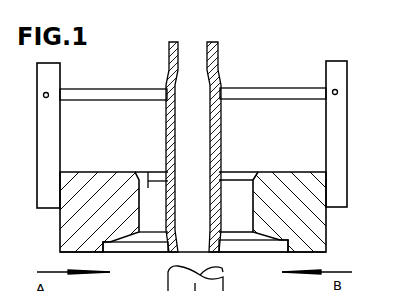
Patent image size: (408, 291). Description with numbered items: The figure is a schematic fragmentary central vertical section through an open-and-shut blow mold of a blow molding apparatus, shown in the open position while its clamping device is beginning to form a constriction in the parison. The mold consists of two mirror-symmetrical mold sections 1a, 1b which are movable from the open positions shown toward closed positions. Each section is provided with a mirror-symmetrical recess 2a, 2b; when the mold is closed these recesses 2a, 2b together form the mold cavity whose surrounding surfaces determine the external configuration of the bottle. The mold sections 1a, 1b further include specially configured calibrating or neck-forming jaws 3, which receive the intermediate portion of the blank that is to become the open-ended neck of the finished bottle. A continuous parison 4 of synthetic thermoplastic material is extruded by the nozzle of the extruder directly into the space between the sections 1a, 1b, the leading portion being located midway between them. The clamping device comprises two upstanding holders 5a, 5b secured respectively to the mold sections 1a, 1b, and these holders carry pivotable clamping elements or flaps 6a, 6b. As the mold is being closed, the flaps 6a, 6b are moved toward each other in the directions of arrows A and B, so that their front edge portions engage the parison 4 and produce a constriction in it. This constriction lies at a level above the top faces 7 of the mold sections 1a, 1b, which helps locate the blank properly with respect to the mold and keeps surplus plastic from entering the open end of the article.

The mold section 1a is at (98, 178).
The mold section 1b is at (282, 178).
The recess 2a is at (148, 253).
The recess 2b is at (250, 252).
The jaws 3 is at (144, 191).
The parison 4 is at (221, 143).
The holder 5a is at (50, 146).
The holder 5b is at (341, 143).
The flap 6a is at (107, 94).
The flap 6b is at (278, 93).
The top faces 7 is at (307, 171).